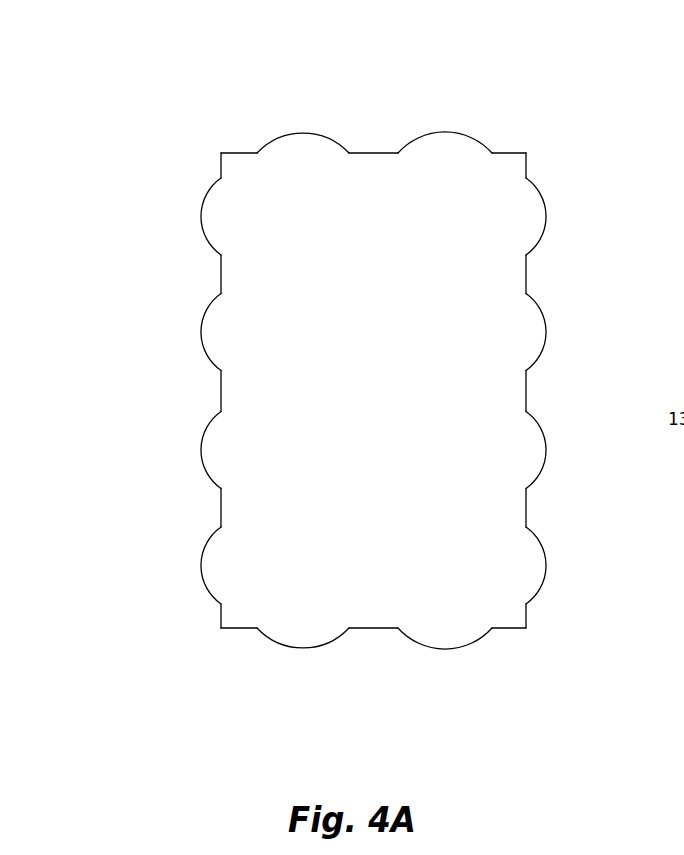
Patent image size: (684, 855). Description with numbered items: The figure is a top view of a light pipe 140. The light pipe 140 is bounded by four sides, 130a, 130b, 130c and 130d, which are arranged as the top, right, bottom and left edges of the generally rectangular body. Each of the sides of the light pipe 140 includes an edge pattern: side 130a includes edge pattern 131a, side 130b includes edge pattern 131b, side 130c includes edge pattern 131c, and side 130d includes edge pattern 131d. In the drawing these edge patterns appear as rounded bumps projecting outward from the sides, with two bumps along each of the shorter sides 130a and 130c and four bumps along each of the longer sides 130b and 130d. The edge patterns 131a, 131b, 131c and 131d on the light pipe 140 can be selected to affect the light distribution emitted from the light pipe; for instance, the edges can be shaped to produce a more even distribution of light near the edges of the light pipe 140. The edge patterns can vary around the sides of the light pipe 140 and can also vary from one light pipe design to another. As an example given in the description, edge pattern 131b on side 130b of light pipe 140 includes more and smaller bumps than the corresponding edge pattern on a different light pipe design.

The light pipe 140 is at (359, 413).
The side 130a is at (361, 84).
The side 130b is at (602, 372).
The side 130c is at (402, 697).
The side 130d is at (149, 410).
The edge pattern 131a is at (374, 84).
The edge pattern 131b is at (545, 440).
The edge pattern 131c is at (374, 697).
The edge pattern 131d is at (201, 455).